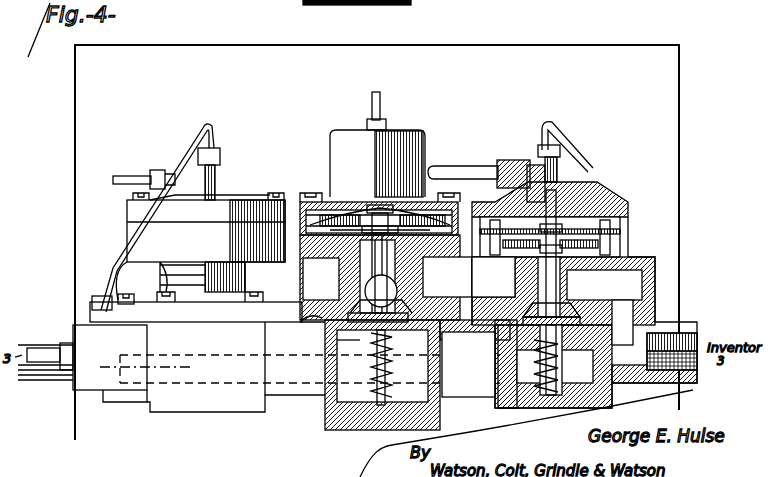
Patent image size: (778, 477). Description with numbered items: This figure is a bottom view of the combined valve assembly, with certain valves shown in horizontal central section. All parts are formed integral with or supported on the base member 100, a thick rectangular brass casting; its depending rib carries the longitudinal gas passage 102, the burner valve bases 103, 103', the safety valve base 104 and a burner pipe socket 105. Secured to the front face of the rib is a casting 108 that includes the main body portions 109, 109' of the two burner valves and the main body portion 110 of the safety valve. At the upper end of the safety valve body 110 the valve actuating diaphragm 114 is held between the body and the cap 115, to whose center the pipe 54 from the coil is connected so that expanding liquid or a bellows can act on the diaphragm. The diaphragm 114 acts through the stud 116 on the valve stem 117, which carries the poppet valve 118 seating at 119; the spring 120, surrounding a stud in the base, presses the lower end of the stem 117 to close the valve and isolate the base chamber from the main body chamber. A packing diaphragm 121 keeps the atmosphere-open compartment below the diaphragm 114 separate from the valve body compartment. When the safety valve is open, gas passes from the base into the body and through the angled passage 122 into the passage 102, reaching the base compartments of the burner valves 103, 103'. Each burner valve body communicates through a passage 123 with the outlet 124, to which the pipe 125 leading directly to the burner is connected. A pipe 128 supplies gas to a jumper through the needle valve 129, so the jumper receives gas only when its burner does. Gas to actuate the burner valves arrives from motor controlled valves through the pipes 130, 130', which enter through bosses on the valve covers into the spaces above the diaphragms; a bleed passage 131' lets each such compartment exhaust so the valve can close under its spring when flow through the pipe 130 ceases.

The base member 100 is at (668, 62).
The main body portion of burner valve 109 is at (185, 246).
The main body portion of safety valve 110 is at (298, 243).
The pipe 130 is at (160, 218).
The needle valve 129 is at (134, 300).
The casting 108 is at (267, 302).
The cap 115 is at (425, 143).
The pipe 54 is at (386, 106).
The pipe 130' is at (486, 168).
The stud 116 is at (392, 247).
The packing diaphragm 121 is at (322, 223).
The valve actuating diaphragm 114 is at (350, 220).
The valve stem 117 is at (380, 262).
The angled passage 122 is at (392, 282).
The seat 119 is at (310, 308).
The poppet valve 118 is at (399, 367).
The spring 120 is at (370, 363).
The safety valve base 104 is at (330, 429).
The burner pipe socket 105 is at (93, 386).
The pipe 128 is at (38, 348).
The pipe 125 is at (18, 345).
The longitudinal gas passage 102 is at (197, 383).
The burner valve base 103 is at (249, 379).
The burner valve base 103' is at (478, 370).
The main body portion of burner valve 109' is at (584, 295).
The bleed passage 131' is at (568, 167).
The passage 123 is at (632, 285).
The outlet 124 is at (693, 333).